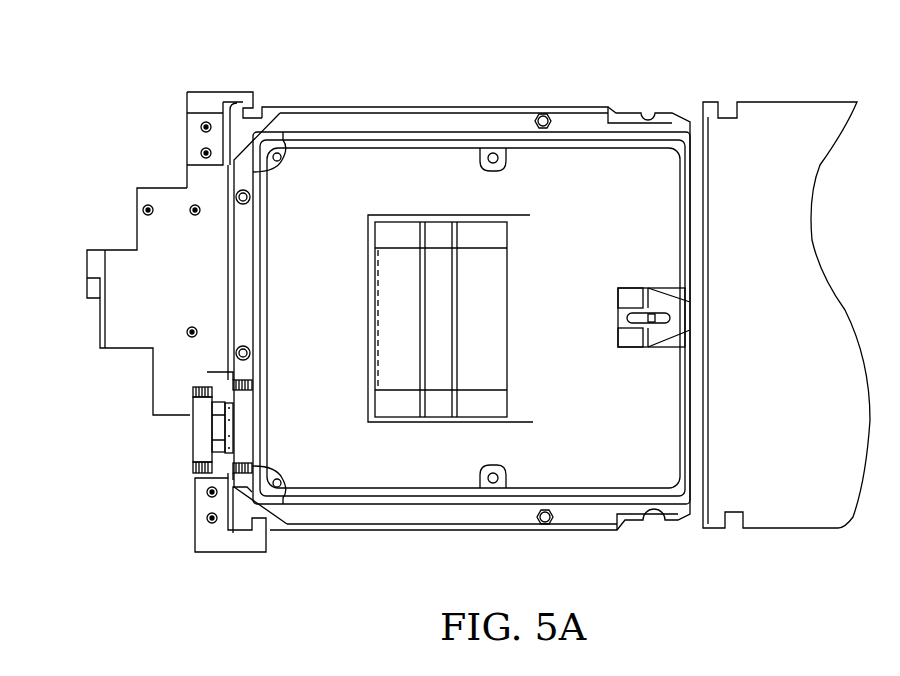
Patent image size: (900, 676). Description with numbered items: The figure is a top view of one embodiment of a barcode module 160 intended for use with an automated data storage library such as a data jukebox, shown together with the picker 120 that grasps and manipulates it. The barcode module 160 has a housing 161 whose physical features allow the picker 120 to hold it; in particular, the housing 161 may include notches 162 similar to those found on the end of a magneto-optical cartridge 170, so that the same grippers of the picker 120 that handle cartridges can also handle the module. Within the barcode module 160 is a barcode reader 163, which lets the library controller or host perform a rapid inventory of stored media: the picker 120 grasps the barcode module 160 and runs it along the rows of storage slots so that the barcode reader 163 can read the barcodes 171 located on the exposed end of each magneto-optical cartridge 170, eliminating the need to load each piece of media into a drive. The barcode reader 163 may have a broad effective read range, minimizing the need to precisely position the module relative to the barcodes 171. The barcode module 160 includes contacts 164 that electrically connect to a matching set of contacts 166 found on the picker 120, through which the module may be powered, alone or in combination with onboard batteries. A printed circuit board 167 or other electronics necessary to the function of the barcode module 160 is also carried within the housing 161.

The barcode module 160 is at (75, 55).
The picker 120 is at (136, 186).
The housing 161 is at (640, 212).
The notches 162 is at (258, 108).
The barcode reader 163 is at (397, 277).
The contacts 164 is at (233, 431).
The contacts 166 is at (213, 437).
The printed circuit board 167 is at (322, 320).
The magneto-optical cartridge 170 is at (763, 140).
The barcodes 171 is at (703, 130).